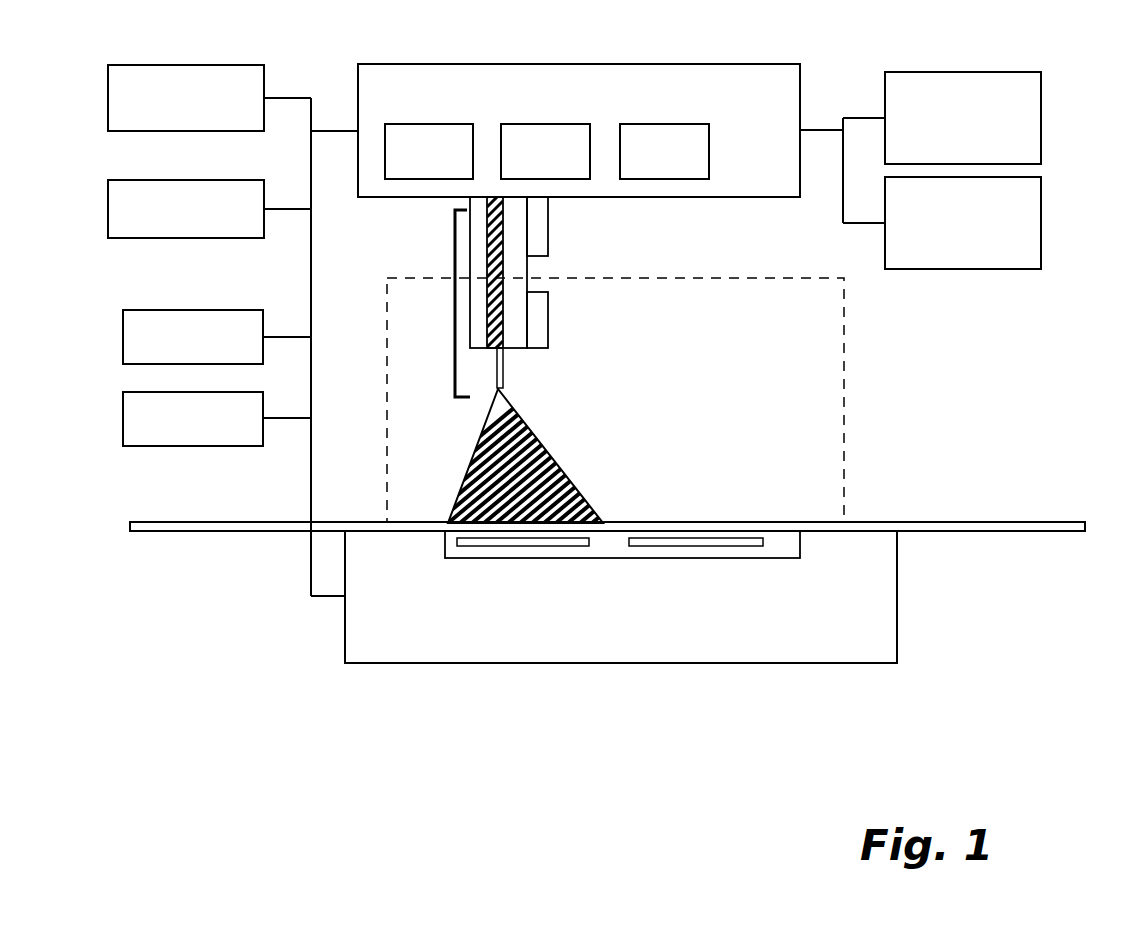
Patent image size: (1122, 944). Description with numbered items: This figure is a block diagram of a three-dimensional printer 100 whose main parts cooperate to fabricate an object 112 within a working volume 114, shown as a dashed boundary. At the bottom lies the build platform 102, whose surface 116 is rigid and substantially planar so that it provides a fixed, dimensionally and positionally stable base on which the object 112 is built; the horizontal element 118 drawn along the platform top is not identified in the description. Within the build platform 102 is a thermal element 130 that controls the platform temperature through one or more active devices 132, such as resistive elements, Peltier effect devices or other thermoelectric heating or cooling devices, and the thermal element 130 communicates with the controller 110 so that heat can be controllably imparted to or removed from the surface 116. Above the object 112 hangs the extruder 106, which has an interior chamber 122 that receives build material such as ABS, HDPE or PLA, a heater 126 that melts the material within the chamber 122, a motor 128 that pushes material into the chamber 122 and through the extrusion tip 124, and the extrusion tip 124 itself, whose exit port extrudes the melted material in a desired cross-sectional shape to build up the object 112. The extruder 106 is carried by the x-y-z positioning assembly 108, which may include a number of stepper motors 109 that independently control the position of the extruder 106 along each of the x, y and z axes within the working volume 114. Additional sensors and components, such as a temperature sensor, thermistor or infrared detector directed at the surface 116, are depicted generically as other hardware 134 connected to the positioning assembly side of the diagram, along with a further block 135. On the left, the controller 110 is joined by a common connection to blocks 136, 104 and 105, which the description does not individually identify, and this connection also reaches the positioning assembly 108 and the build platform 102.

The printer 100 is at (1026, 376).
The build platform 102 is at (839, 648).
The controller module 104 is at (174, 348).
The controller module 105 is at (174, 429).
The extruder 106 is at (455, 258).
The x-y-z positioning assembly 108 is at (401, 109).
The stepper motors 109 is at (409, 162).
The controller 110 is at (168, 220).
The object 112 is at (547, 443).
The working volume 114 is at (844, 397).
The surface 116 is at (422, 538).
The platform 118 is at (930, 521).
The chamber 122 is at (476, 305).
The extrusion tip 124 is at (497, 371).
The heater 126 is at (548, 318).
The motor 128 is at (548, 228).
The thermal element 130 is at (582, 558).
The active devices 132 is at (713, 548).
The other hardware 134 is at (916, 138).
The input device 135 is at (921, 231).
The power supply 136 is at (168, 109).